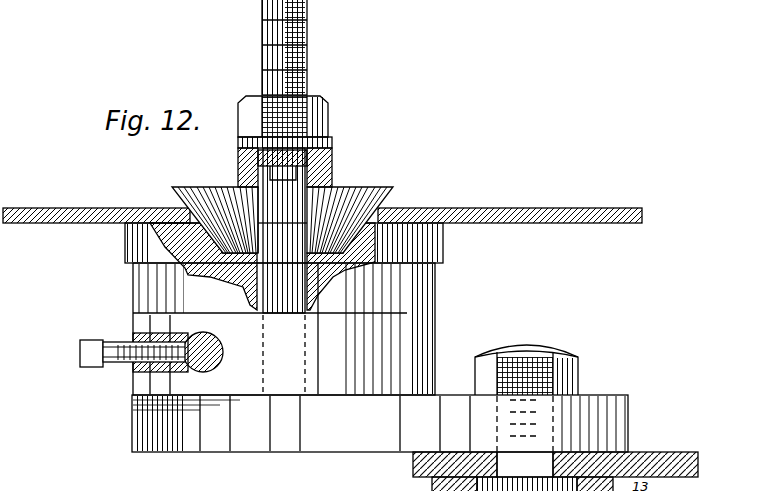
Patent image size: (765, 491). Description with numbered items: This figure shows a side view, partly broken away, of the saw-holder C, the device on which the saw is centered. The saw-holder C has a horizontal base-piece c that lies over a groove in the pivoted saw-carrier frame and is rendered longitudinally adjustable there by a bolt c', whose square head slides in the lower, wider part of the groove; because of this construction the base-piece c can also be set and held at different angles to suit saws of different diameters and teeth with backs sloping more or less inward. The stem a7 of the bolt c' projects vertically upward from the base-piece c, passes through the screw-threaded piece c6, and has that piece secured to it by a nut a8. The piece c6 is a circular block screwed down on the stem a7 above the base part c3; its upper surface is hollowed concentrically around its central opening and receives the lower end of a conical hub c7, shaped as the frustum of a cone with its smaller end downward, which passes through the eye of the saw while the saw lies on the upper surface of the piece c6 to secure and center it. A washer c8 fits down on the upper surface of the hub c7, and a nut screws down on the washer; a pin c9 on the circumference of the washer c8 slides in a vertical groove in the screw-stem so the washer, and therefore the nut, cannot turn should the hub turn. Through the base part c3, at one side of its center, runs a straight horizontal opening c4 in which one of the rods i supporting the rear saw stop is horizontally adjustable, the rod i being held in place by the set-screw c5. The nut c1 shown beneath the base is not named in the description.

The stem of the bolt a7 is at (296, 47).
The nut a8 is at (294, 116).
The washer c8 is at (292, 162).
The pin c9 is at (240, 164).
The conical hub c7 is at (282, 210).
The screw-threaded piece c6 is at (262, 266).
The saw-holder C is at (291, 309).
The base part c3 is at (302, 354).
The horizontal opening c4 is at (188, 352).
The rod i is at (204, 337).
The set-screw c5 is at (132, 342).
The base-piece c is at (380, 423).
The bolt c' is at (526, 357).
The bolt nut c1 is at (555, 471).